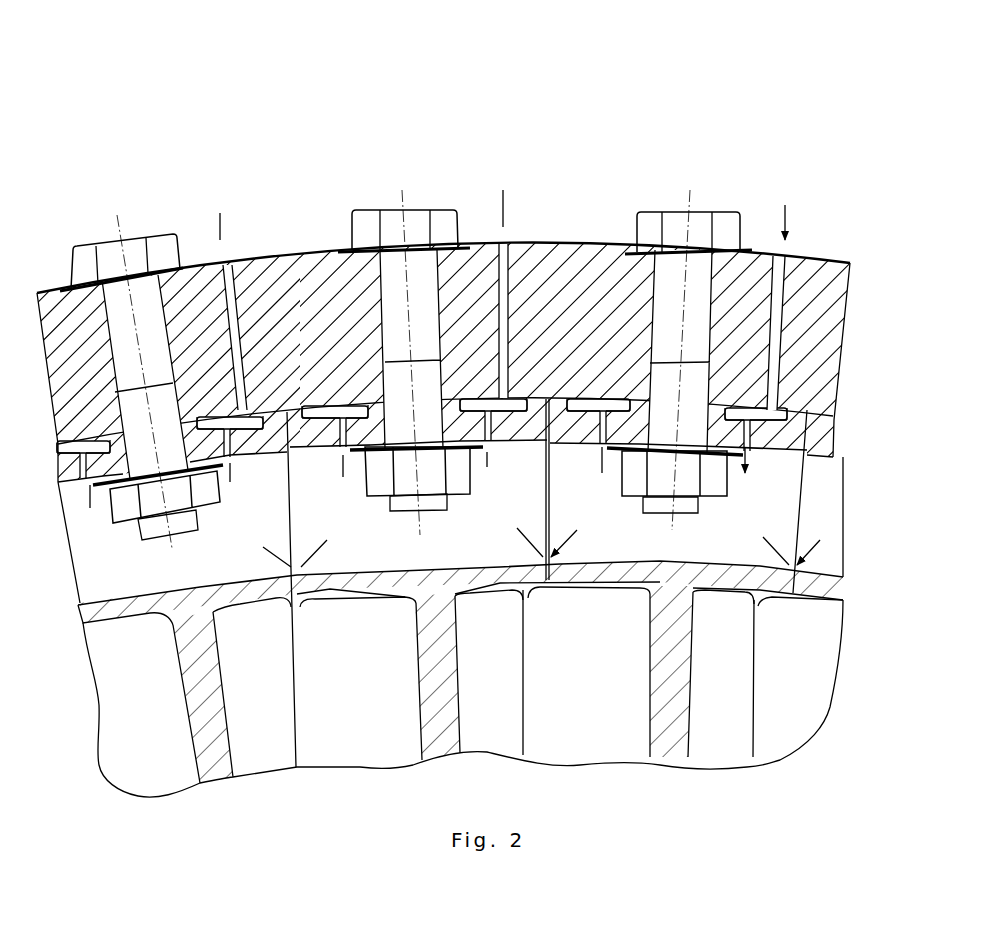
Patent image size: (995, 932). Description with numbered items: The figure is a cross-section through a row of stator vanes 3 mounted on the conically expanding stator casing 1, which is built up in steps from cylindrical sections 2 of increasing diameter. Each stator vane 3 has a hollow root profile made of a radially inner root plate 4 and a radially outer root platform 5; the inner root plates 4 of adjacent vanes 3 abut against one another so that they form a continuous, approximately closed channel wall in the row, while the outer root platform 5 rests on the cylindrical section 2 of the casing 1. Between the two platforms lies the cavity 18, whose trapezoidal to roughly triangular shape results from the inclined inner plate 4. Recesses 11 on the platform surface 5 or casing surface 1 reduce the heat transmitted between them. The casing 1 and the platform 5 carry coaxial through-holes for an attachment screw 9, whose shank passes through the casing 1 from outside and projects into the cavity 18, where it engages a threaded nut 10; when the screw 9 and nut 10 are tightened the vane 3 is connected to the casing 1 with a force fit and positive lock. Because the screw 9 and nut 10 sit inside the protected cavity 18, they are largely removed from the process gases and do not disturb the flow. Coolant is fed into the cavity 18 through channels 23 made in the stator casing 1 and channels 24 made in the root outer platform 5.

The stator casing 1 is at (806, 257).
The cylindrical sections 2 is at (582, 398).
The stator vane 3 is at (452, 690).
The radially inner root plate 4 is at (354, 577).
The radially outer root platform 5 is at (333, 405).
The attachment screw 9 is at (419, 212).
The threaded nut 10 is at (458, 409).
The recesses 11 is at (362, 398).
The cavity 18 is at (496, 490).
The channels 23 is at (531, 187).
The channels 24 is at (491, 412).